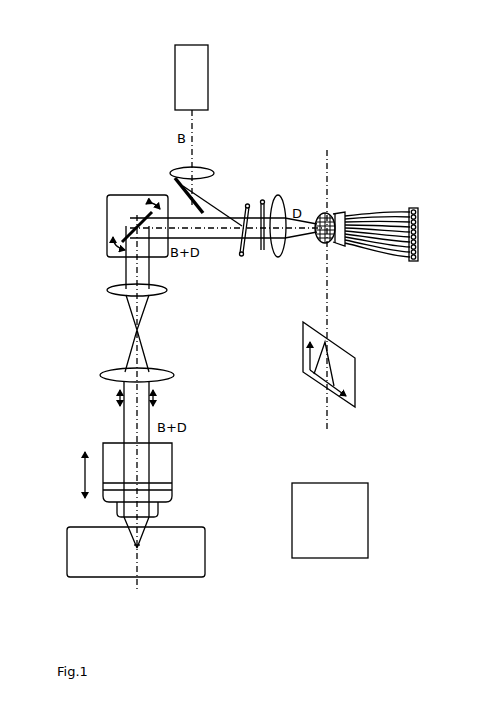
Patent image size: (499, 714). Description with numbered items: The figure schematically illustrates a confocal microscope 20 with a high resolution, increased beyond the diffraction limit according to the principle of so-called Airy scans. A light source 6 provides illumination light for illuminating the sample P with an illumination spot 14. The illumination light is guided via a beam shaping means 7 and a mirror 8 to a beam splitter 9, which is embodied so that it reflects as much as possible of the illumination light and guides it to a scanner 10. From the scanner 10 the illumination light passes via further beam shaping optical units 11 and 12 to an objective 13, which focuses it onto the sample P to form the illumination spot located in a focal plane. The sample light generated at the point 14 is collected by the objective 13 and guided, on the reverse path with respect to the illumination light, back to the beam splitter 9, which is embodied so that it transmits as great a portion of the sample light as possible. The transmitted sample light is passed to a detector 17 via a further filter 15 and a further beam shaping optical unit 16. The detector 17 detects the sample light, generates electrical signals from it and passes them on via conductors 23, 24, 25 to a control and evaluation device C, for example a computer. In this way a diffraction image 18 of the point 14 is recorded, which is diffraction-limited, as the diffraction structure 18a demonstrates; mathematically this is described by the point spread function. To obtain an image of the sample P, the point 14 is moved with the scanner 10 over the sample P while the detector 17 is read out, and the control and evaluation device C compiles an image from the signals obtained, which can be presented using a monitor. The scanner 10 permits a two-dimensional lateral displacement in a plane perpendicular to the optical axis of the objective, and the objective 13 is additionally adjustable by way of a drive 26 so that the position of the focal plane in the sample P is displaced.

The confocal microscope 20 is at (56, 82).
The light source 6 is at (208, 88).
The beam shaping means 7 is at (213, 171).
The mirror 8 is at (173, 178).
The beam splitter 9 is at (243, 257).
The scanner 10 is at (122, 195).
The beam shaping optical unit 11 is at (166, 288).
The beam shaping optical unit 12 is at (173, 373).
The objective 13 is at (172, 472).
The illumination spot 14 is at (137, 586).
The filter 15 is at (263, 202).
The beam shaping optical unit 16 is at (277, 258).
The detector 17 is at (330, 215).
The diffraction image 18 is at (332, 245).
The diffraction structure 18a is at (328, 360).
The conductor 23 is at (412, 213).
The conductor 24 is at (377, 222).
The conductor 25 is at (377, 244).
The drive 26 is at (83, 478).
The sample P is at (185, 556).
The control and evaluation device C is at (330, 520).